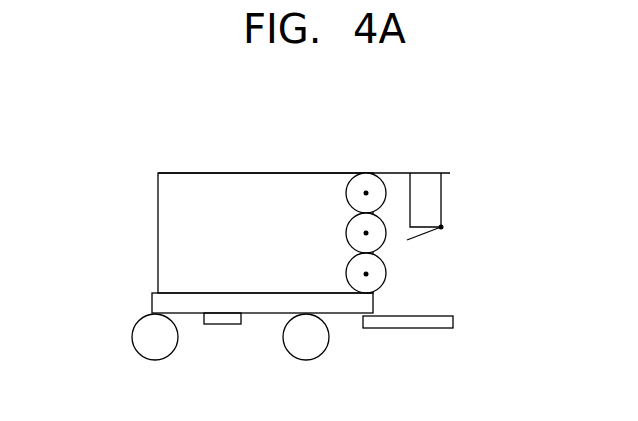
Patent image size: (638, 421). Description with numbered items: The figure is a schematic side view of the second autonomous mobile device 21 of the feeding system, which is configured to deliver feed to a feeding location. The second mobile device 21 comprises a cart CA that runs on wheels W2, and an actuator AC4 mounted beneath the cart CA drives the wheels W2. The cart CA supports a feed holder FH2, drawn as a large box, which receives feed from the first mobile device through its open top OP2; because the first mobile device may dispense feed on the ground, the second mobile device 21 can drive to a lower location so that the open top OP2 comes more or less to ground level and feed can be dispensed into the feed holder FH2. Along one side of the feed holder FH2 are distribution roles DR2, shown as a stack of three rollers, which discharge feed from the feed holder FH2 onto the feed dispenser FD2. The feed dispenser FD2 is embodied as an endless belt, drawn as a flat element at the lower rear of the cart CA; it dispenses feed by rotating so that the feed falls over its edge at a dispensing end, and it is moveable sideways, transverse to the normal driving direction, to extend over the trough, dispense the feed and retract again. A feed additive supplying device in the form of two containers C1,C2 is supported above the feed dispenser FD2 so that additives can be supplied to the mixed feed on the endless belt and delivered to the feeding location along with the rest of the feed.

The second autonomous mobile device 21 is at (115, 173).
The feed holder FH2 is at (171, 218).
The open top OP2 is at (274, 174).
The containers C1,C2 is at (426, 197).
The distribution roles DR2 is at (366, 193).
The cart CA is at (165, 303).
The actuator AC4 is at (223, 318).
The wheels W2 is at (158, 337).
The feed dispenser FD2 is at (437, 322).